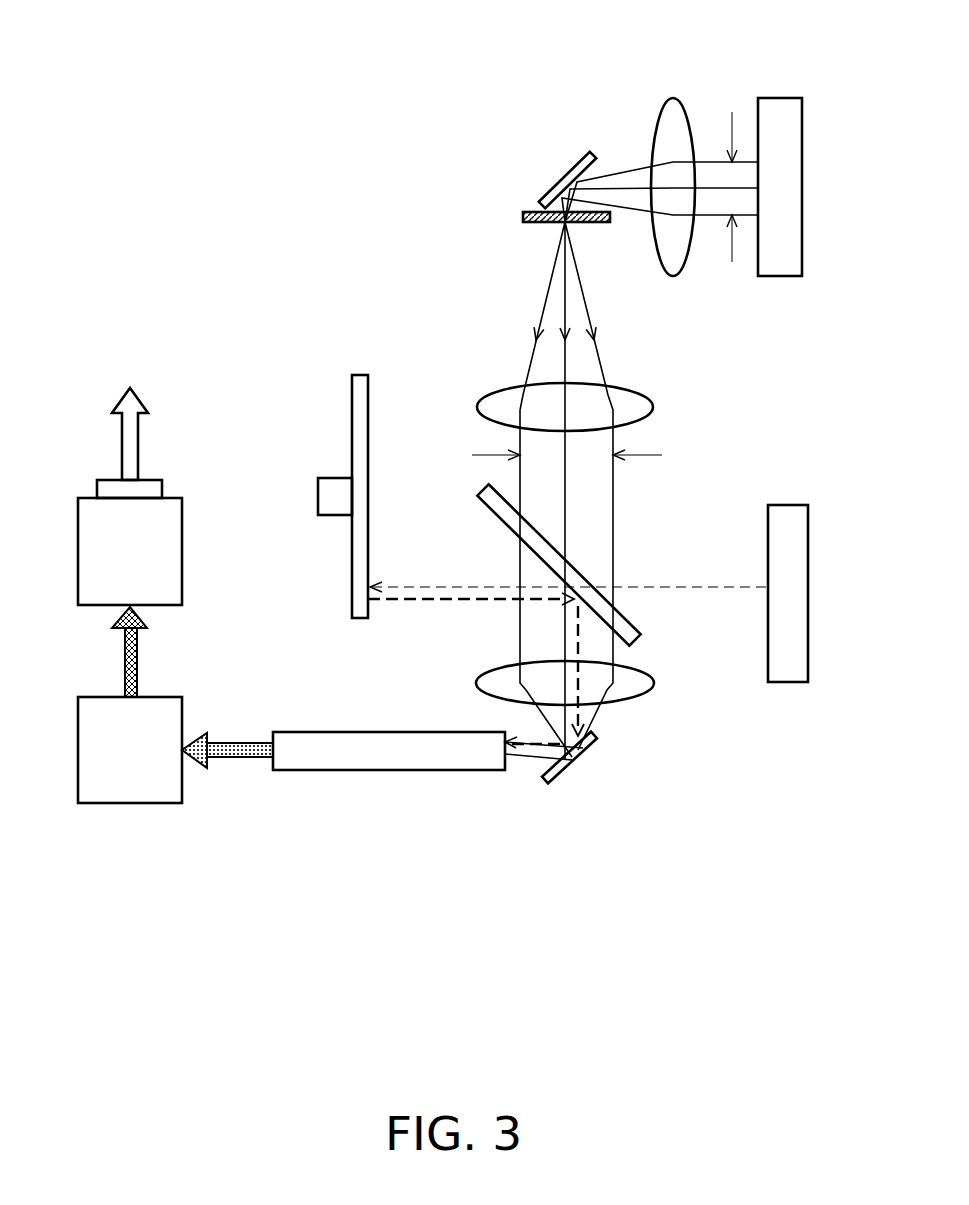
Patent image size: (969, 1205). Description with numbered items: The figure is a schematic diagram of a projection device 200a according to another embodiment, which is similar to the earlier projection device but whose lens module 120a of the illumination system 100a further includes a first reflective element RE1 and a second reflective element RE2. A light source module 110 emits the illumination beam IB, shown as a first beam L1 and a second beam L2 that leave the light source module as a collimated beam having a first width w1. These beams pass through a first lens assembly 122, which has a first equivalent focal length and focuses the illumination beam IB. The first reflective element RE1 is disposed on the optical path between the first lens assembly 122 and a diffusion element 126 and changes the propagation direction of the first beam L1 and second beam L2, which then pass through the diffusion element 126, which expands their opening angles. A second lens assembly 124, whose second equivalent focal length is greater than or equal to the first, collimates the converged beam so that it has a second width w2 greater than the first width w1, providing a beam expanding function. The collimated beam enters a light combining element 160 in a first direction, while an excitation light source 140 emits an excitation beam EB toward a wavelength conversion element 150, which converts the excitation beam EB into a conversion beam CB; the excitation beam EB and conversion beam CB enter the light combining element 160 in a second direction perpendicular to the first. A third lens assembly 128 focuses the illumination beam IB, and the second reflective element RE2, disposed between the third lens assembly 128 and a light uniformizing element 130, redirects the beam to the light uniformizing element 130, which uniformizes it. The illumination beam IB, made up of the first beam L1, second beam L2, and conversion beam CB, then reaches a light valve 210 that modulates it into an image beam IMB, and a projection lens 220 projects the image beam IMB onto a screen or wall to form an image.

The illumination system 100a is at (316, 108).
The light source module 110 is at (787, 108).
The lens module 120a is at (836, 873).
The first lens assembly 122 is at (670, 110).
The second lens assembly 124 is at (638, 404).
The diffusion element 126 is at (523, 217).
The third lens assembly 128 is at (640, 685).
The light uniformizing element 130 is at (380, 760).
The excitation light source 140 is at (788, 668).
The wavelength conversion element 150 is at (360, 385).
The light combining element 160 is at (645, 635).
The projection device 200a is at (100, 1045).
The light valve 210 is at (125, 788).
The projection lens 220 is at (153, 553).
The first reflective element RE1 is at (584, 158).
The second reflective element RE2 is at (580, 757).
The first beam L1 is at (713, 215).
The second beam L2 is at (716, 919).
The conversion beam CB is at (417, 601).
The excitation beam EB is at (700, 585).
The illumination beam IB is at (232, 760).
The image beam IMB is at (135, 655).
The first width w1 is at (731, 170).
The second width w2 is at (549, 460).